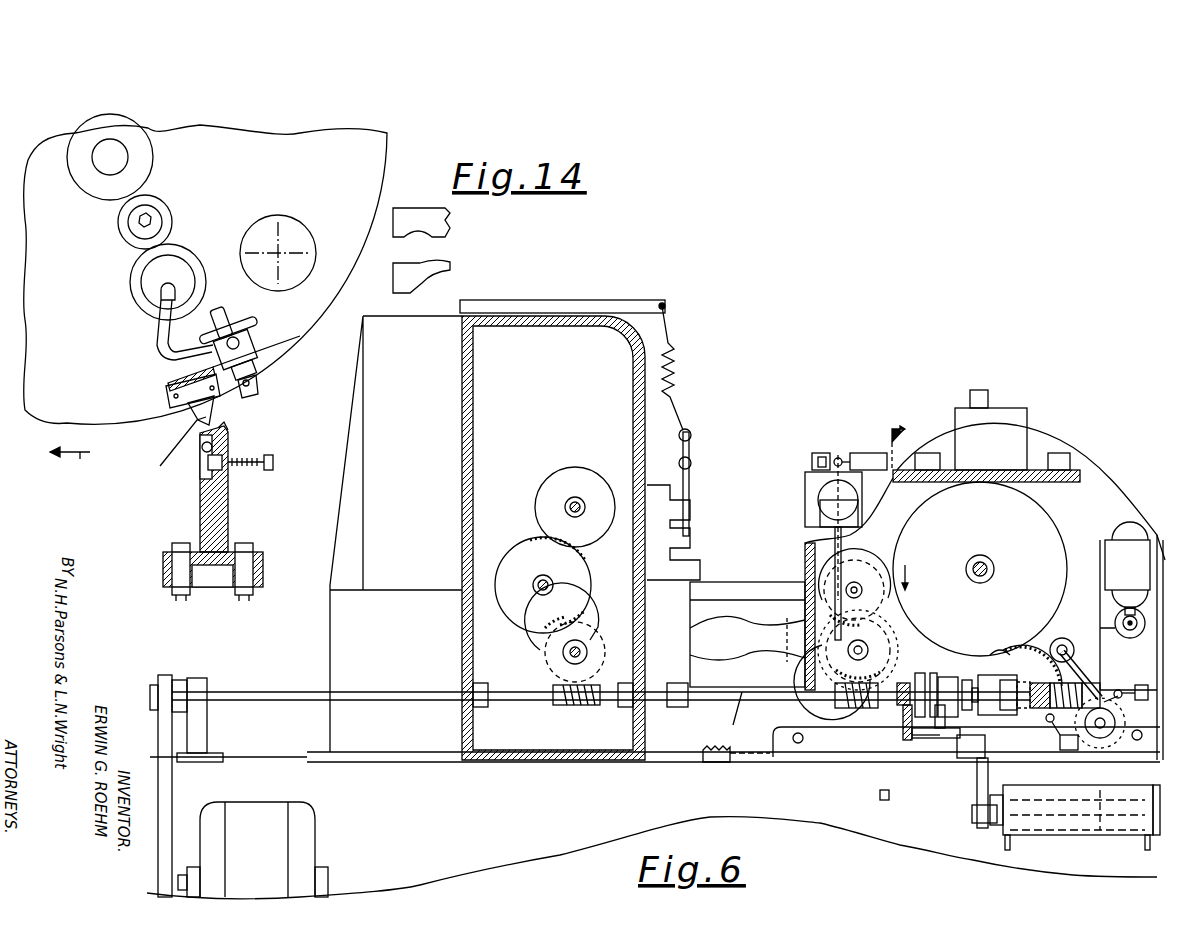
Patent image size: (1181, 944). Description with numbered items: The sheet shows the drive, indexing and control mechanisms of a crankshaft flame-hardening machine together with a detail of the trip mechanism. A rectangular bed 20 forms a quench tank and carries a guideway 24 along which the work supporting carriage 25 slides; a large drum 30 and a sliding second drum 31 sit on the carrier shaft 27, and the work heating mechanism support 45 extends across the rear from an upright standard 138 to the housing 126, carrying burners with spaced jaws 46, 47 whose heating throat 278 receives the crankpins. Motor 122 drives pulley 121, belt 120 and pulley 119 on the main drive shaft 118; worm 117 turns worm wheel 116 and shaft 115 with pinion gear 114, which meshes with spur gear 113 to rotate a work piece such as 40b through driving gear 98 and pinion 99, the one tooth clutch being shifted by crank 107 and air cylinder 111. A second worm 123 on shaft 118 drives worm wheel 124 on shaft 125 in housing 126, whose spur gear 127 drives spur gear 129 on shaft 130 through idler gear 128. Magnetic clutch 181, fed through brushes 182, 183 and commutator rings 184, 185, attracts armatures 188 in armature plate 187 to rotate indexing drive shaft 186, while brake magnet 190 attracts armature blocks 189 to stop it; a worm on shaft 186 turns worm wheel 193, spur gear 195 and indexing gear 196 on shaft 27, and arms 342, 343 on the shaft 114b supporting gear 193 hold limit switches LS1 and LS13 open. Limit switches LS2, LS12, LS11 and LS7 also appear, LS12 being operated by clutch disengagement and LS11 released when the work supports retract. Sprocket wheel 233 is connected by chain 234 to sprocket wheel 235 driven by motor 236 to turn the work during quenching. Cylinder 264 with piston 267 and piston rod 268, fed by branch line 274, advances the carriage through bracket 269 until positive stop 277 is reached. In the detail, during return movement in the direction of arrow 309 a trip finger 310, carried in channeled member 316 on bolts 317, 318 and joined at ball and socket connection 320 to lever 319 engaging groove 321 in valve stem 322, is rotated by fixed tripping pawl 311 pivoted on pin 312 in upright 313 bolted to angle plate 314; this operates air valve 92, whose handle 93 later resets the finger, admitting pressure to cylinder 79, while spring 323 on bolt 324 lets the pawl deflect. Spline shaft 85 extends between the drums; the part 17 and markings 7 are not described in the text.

In FIG. 14, the opening 17 is at (100, 150).
In FIG. 14, the second drum 31 is at (375, 146).
In FIG. 14, the spline shaft 85 is at (152, 218).
In FIG. 14, the air cylinder 79 is at (176, 262).
In FIG. 14, the work piece 40b is at (283, 250).
In FIG. 14, the control valve 92 is at (240, 338).
In FIG. 14, the operating handle 93 is at (250, 353).
In FIG. 14, the valve stem 322 is at (292, 351).
In FIG. 14, the groove 321 is at (252, 383).
In FIG. 14, the bolt 318 is at (166, 383).
In FIG. 14, the channeled member 316 is at (166, 392).
In FIG. 14, the bolt 317 is at (172, 402).
In FIG. 14, the ball and socket connection 320 is at (190, 412).
In FIG. 14, the lever 319 is at (250, 395).
In FIG. 14, the arrow 309 is at (69, 465).
In FIG. 14, the trip finger 310 is at (172, 444).
In FIG. 14, the tripping pawl 311 is at (226, 428).
In FIG. 14, the pin 312 is at (214, 446).
In FIG. 14, the upright 313 is at (224, 505).
In FIG. 14, the angle plate 314 is at (212, 587).
In FIG. 14, the spring 323 is at (262, 470).
In FIG. 14, the bolt 324 is at (274, 462).
In FIG. 14, the burner jaw 46 is at (416, 215).
In FIG. 6, the burner jaw 46 is at (707, 605).
In FIG. 14, the work heating mechanism support 45 is at (410, 315).
In FIG. 14, the heating throat 278 is at (420, 248).
In FIG. 6, the heating throat 278 is at (729, 718).
In FIG. 6, the upright standard 138 is at (335, 580).
In FIG. 6, the housing 126 is at (468, 626).
In FIG. 6, the spur gear 129 is at (556, 482).
In FIG. 6, the shaft 130 is at (578, 500).
In FIG. 6, the idler gear 128 is at (525, 560).
In FIG. 6, the spur gear 127 is at (586, 628).
In FIG. 6, the shaft 125 is at (566, 652).
In FIG. 6, the worm wheel 124 is at (548, 665).
In FIG. 6, the worm 123 is at (580, 706).
In FIG. 6, the pulley 119 is at (158, 680).
In FIG. 6, the belt 120 is at (170, 782).
In FIG. 6, the pulley 121 is at (175, 897).
In FIG. 6, the motor 122 is at (264, 815).
In FIG. 6, the bed 20 is at (958, 837).
In FIG. 6, the pinion gear 114 is at (810, 616).
In FIG. 6, the shaft 115 is at (798, 667).
In FIG. 6, the burner jaw 47 is at (728, 688).
In FIG. 6, the main drive shaft 118 is at (787, 693).
In FIG. 6, the guideway 24 is at (728, 765).
In FIG. 6, the air cylinder 111 is at (820, 496).
In FIG. 6, the crank 107 is at (833, 556).
In FIG. 6, the pinion gear 99 is at (833, 576).
In FIG. 6, the spur gear 113 is at (862, 583).
In FIG. 6, the worm wheel 116 is at (850, 686).
In FIG. 6, the worm 117 is at (861, 705).
In FIG. 6, the direction 7 is at (890, 519).
In FIG. 6, the driving gear 98 is at (903, 622).
In FIG. 6, the drum 30 is at (1036, 440).
In FIG. 6, the work supporting carriage 25 is at (1087, 488).
In FIG. 6, the limit switch LS2 is at (815, 455).
In FIG. 6, the limit switch LS12 is at (870, 455).
In FIG. 6, the limit switch LS11 is at (925, 452).
In FIG. 6, the limit switch LS7 is at (1058, 455).
In FIG. 6, the indexing gear 196 is at (1025, 507).
In FIG. 6, the shaft 27 is at (990, 565).
In FIG. 6, the motor 236 is at (1130, 525).
In FIG. 6, the sprocket wheel 235 is at (1122, 592).
In FIG. 6, the chain 234 is at (1130, 640).
In FIG. 6, the arm 343 is at (1102, 695).
In FIG. 6, the spur gear 195 is at (1060, 622).
In FIG. 6, the worm wheel 193 is at (1026, 638).
In FIG. 6, the brake magnet 190 is at (998, 678).
In FIG. 6, the armature blocks 189 is at (981, 677).
In FIG. 6, the commutator ring 185 is at (935, 672).
In FIG. 6, the commutator ring 184 is at (930, 676).
In FIG. 6, the brush 182 is at (912, 733).
In FIG. 6, the brush 183 is at (953, 725).
In FIG. 6, the armatures 188 is at (972, 705).
In FIG. 6, the armature plate 187 is at (980, 712).
In FIG. 6, the indexing drive shaft 186 is at (1058, 722).
In FIG. 6, the shaft 114b is at (1082, 640).
In FIG. 6, the limit switch LS13 is at (1130, 706).
In FIG. 6, the sprocket wheel 233 is at (1139, 744).
In FIG. 6, the arm 342 is at (1060, 766).
In FIG. 6, the limit switch LS1 is at (1050, 752).
In FIG. 6, the piston 267 is at (1120, 788).
In FIG. 6, the cylinder 264 is at (1075, 835).
In FIG. 6, the piston rod 268 is at (1012, 835).
In FIG. 6, the branch line 274 is at (1146, 840).
In FIG. 6, the bracket 269 is at (983, 793).
In FIG. 6, the magnetic clutch 181 is at (950, 760).
In FIG. 6, the positive stop 277 is at (884, 800).